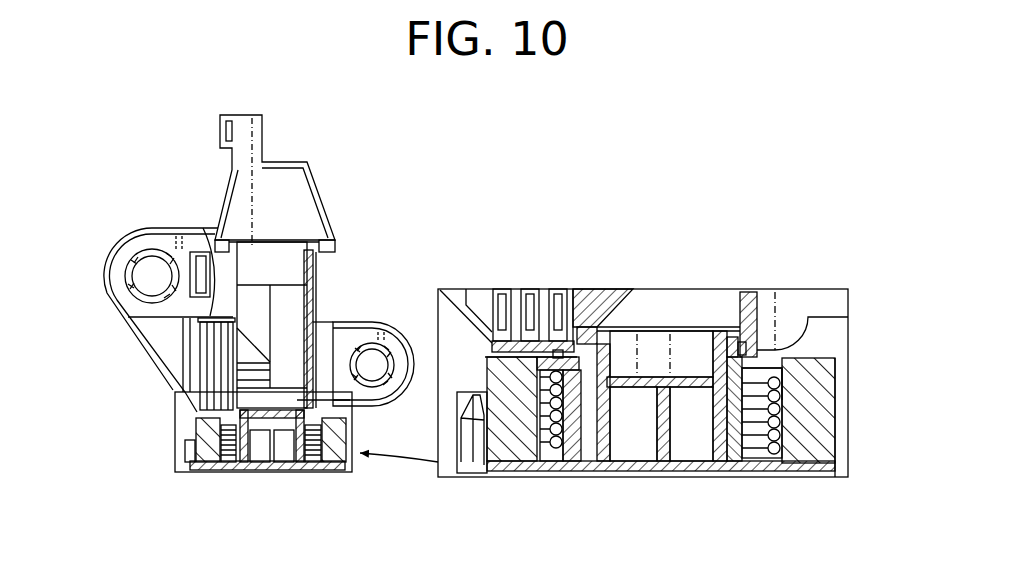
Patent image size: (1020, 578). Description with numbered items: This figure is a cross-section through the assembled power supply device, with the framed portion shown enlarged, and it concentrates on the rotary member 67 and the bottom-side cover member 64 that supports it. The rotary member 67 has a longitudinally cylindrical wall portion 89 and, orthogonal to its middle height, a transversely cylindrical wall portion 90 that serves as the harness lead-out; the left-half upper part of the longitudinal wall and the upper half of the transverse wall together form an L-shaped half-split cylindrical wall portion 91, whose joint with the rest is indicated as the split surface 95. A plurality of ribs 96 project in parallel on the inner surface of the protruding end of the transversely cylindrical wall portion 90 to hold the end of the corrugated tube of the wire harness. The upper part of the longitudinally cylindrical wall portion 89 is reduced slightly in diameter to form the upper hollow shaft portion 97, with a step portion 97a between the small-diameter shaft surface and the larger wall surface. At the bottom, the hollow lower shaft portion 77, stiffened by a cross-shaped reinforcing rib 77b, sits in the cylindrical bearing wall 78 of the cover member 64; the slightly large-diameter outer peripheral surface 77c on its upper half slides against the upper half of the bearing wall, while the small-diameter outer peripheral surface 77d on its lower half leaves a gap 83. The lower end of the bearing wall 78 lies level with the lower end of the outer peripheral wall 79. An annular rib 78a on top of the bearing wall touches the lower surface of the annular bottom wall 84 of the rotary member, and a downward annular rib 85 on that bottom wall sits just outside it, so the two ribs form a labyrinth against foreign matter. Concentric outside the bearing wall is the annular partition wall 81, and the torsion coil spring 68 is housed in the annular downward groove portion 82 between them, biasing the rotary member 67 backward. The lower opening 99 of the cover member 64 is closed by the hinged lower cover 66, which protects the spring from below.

The cover member 64 is at (838, 455).
The lower cover 66 is at (533, 467).
The rotary member 67 is at (317, 343).
The torsion coil spring 68 is at (775, 393).
The lower shaft portion 77 is at (603, 461).
The reinforcing rib 77b is at (668, 440).
The large-diameter outer peripheral surface 77c is at (760, 347).
The small-diameter outer peripheral surface 77d is at (590, 455).
The cylindrical bearing wall 78 is at (733, 452).
The annular rib 78a is at (748, 335).
The outer peripheral wall 79 is at (840, 422).
The annular partition wall 81 is at (778, 472).
The annular downward groove portion 82 is at (761, 456).
The gap 83 is at (575, 435).
The annular bottom wall 84 is at (735, 340).
The annular rib 85 is at (808, 320).
The longitudinally cylindrical wall portion 89 is at (313, 368).
The transversely cylindrical wall portion 90 is at (202, 452).
The half-split cylindrical wall portion 91 is at (250, 297).
The split surface 95 is at (237, 408).
The ribs 96 is at (553, 300).
The upper hollow shaft portion 97 is at (262, 285).
The step portion 97a is at (172, 287).
The lower opening 99 is at (752, 468).